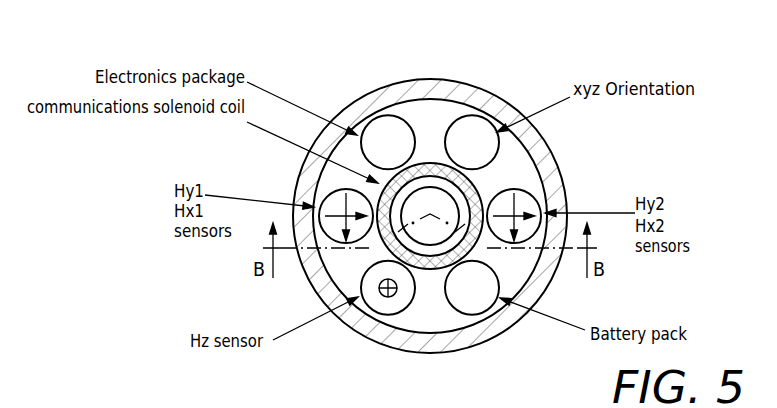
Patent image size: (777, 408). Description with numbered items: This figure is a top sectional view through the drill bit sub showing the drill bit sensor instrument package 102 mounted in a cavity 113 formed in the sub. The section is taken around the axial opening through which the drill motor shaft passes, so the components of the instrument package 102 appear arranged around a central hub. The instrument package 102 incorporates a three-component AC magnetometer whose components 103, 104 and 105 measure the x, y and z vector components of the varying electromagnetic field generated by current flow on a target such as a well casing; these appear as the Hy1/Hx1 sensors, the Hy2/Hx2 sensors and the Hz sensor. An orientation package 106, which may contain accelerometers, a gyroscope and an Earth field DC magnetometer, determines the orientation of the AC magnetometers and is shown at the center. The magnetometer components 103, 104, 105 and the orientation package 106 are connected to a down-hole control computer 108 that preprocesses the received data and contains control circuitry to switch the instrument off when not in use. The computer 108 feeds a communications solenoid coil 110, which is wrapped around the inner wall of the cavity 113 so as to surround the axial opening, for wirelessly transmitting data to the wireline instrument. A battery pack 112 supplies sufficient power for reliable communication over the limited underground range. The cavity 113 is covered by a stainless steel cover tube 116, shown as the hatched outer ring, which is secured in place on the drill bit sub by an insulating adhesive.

The drill bit sensor instrument package 102 is at (507, 88).
The stainless steel cover tube 116 is at (464, 84).
The cavity 113 is at (433, 315).
The orientation package 106 is at (477, 193).
The down-hole control computer 108 is at (388, 127).
The communications solenoid coil 110 is at (494, 148).
The magnetometer component 103 is at (328, 206).
The magnetometer component 104 is at (530, 190).
The magnetometer component 105 is at (382, 297).
The battery pack 112 is at (476, 300).